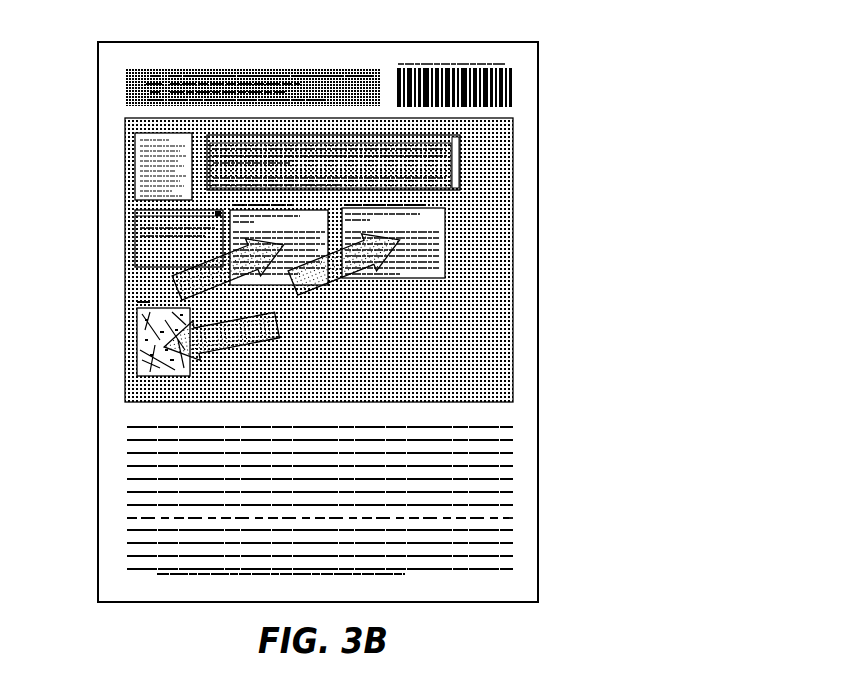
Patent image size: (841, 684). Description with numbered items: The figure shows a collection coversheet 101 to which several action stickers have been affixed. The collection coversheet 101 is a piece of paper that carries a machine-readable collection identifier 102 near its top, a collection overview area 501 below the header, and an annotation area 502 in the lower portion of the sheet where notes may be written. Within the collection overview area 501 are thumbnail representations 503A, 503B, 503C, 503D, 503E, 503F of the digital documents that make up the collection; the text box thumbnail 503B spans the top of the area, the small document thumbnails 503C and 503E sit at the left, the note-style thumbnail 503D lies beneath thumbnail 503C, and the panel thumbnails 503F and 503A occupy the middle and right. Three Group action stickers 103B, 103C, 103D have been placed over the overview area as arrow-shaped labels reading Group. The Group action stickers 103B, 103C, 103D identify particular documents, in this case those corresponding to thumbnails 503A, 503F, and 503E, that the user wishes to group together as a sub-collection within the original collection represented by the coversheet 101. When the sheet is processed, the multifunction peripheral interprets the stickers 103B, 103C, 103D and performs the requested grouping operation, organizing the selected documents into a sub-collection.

The collection coversheet 101 is at (116, 43).
The machine-readable collection identifier 102 is at (437, 62).
The collection overview area 501 is at (125, 125).
The annotation area 502 is at (125, 432).
The thumbnail representation 503A is at (443, 237).
The thumbnail representation 503B is at (461, 150).
The thumbnail representation 503C is at (125, 190).
The thumbnail representation 503D is at (125, 255).
The thumbnail representation 503E is at (125, 340).
The thumbnail representation 503F is at (313, 207).
The Group action sticker 103B is at (377, 265).
The Group action sticker 103C is at (258, 272).
The Group action sticker 103D is at (251, 344).